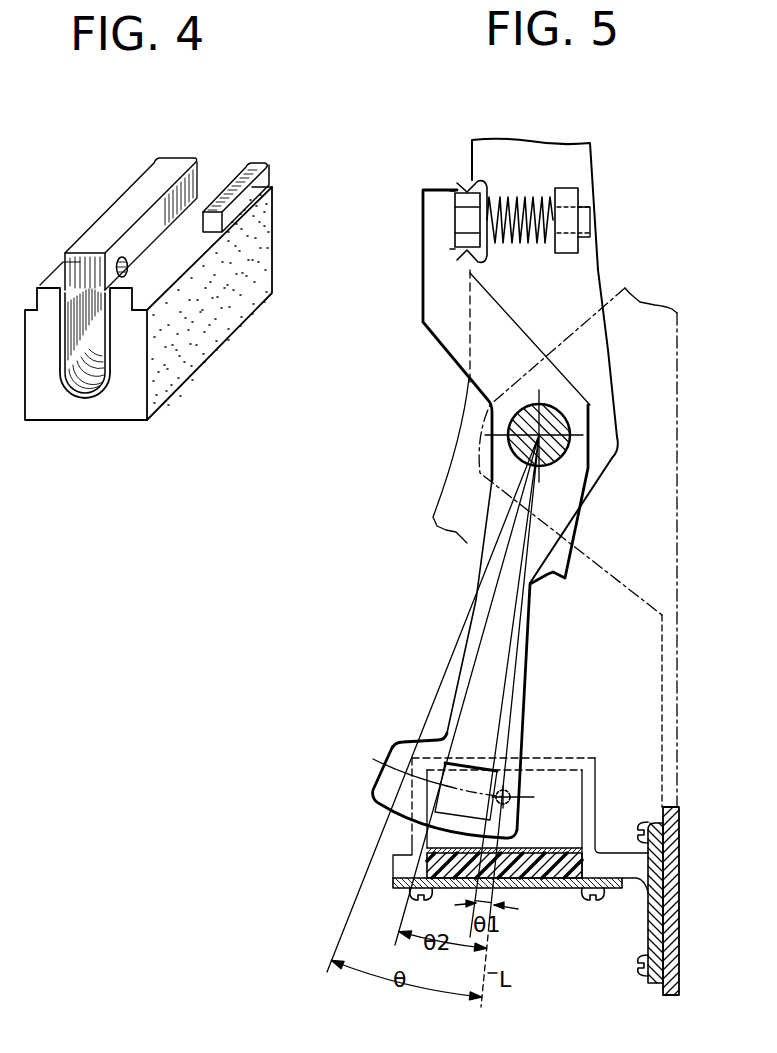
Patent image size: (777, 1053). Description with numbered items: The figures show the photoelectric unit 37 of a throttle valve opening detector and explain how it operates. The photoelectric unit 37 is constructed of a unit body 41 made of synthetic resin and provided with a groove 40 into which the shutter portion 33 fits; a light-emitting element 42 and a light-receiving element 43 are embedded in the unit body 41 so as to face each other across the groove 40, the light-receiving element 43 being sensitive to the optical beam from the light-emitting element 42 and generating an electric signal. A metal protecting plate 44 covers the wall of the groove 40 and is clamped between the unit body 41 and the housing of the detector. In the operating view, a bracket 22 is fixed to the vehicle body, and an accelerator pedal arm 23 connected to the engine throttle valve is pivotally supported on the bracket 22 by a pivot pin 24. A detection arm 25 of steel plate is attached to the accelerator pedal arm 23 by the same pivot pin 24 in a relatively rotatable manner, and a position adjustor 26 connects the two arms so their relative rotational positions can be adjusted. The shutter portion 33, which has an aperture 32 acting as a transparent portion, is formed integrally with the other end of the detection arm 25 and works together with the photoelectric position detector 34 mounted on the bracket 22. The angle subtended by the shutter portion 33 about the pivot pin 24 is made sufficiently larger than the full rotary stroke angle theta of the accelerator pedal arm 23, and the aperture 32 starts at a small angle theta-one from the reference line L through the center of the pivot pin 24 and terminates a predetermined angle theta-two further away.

In FIG. 5, the bracket 22 is at (676, 852).
In FIG. 5, the accelerator pedal arm 23 is at (582, 162).
In FIG. 5, the pivot pin 24 is at (556, 456).
In FIG. 5, the detection arm 25 is at (500, 503).
In FIG. 5, the position adjustor 26 is at (520, 197).
In FIG. 5, the aperture 32 is at (448, 770).
In FIG. 5, the shutter portion 33 is at (407, 742).
In FIG. 5, the photoelectric position detector 34 is at (603, 770).
In FIG. 4, the photoelectric unit 37 is at (245, 159).
In FIG. 4, the groove 40 is at (81, 349).
In FIG. 4, the unit body 41 is at (137, 352).
In FIG. 4, the light-emitting element 42 is at (131, 273).
In FIG. 5, the light-emitting element 42 is at (508, 791).
In FIG. 5, the light-receiving element 43 is at (503, 797).
In FIG. 4, the metal protecting plate 44 is at (100, 397).